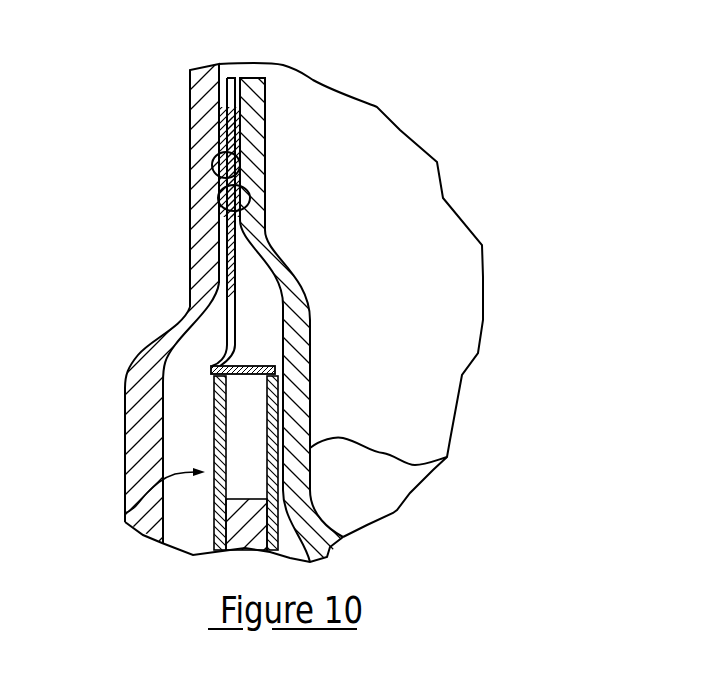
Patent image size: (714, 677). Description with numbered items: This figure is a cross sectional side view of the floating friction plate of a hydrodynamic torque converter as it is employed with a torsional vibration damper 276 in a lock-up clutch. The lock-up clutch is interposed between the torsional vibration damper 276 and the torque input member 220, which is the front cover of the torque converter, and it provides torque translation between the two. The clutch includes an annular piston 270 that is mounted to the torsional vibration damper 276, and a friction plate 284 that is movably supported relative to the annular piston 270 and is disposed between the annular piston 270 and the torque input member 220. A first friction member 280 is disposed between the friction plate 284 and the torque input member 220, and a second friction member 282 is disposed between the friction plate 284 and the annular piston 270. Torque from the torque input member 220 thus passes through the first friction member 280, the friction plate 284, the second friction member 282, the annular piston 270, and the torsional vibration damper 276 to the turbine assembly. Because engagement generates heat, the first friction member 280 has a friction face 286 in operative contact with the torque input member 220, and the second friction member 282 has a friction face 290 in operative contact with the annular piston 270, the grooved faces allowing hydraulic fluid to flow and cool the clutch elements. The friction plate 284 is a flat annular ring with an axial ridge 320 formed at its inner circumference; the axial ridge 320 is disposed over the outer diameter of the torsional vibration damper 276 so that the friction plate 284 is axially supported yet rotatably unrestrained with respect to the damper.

The torque input member 220 is at (125, 402).
The annular piston 270 is at (447, 457).
The torsional vibration damper 276 is at (125, 513).
The first friction member 280 is at (217, 125).
The second friction member 282 is at (247, 141).
The friction plate 284 is at (231, 78).
The friction face 286 is at (237, 213).
The friction face 290 is at (240, 176).
The axial ridge 320 is at (253, 366).